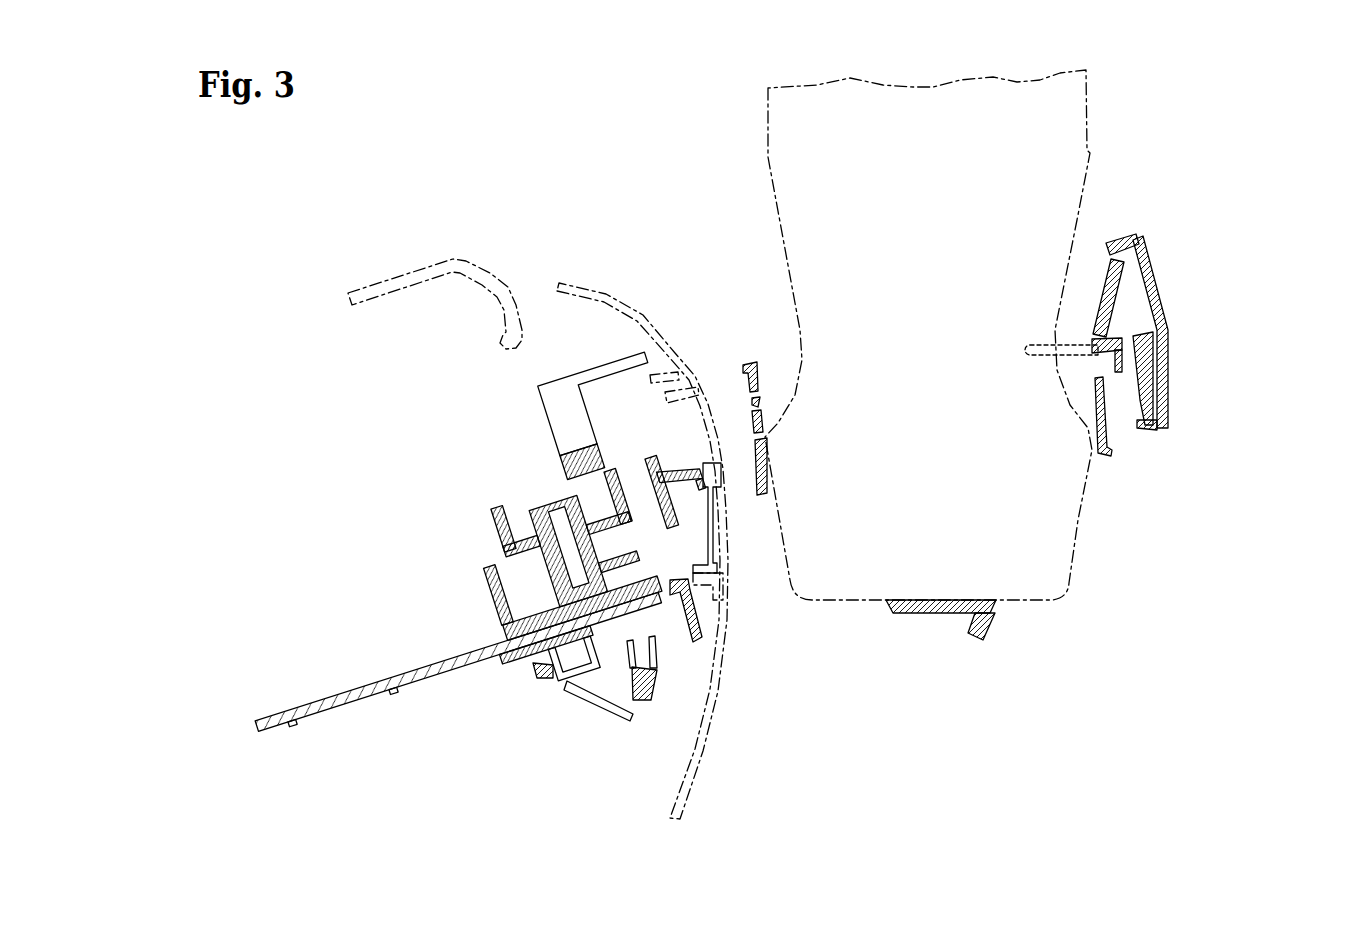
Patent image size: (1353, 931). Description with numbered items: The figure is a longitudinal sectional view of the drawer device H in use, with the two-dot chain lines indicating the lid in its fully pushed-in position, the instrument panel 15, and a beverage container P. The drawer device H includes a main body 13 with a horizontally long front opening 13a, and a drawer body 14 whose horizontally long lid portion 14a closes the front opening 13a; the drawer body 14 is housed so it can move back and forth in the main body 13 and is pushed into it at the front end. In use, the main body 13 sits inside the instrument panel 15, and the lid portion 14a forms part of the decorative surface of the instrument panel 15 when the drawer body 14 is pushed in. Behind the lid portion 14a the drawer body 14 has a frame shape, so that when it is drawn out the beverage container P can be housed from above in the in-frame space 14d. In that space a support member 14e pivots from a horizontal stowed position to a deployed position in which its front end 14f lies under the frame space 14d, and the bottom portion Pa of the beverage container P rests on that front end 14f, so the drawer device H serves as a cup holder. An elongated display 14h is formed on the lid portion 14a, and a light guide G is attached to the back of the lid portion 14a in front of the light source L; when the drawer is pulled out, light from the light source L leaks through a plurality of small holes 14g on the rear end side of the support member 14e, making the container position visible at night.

The main body 13 is at (370, 699).
The front opening 13a is at (682, 427).
The drawer body 14 is at (1172, 392).
The lid portion 14a is at (738, 548).
The in-frame space 14d is at (948, 428).
The support member 14e is at (937, 613).
The front end 14f is at (1003, 613).
The small holes 14g is at (770, 437).
The display 14h is at (1163, 333).
The instrument panel 15 is at (627, 302).
The beverage container P is at (1072, 140).
The bottom portion Pa is at (932, 598).
The drawer device H is at (1180, 188).
The light guide G is at (1132, 387).
The light source L is at (632, 663).